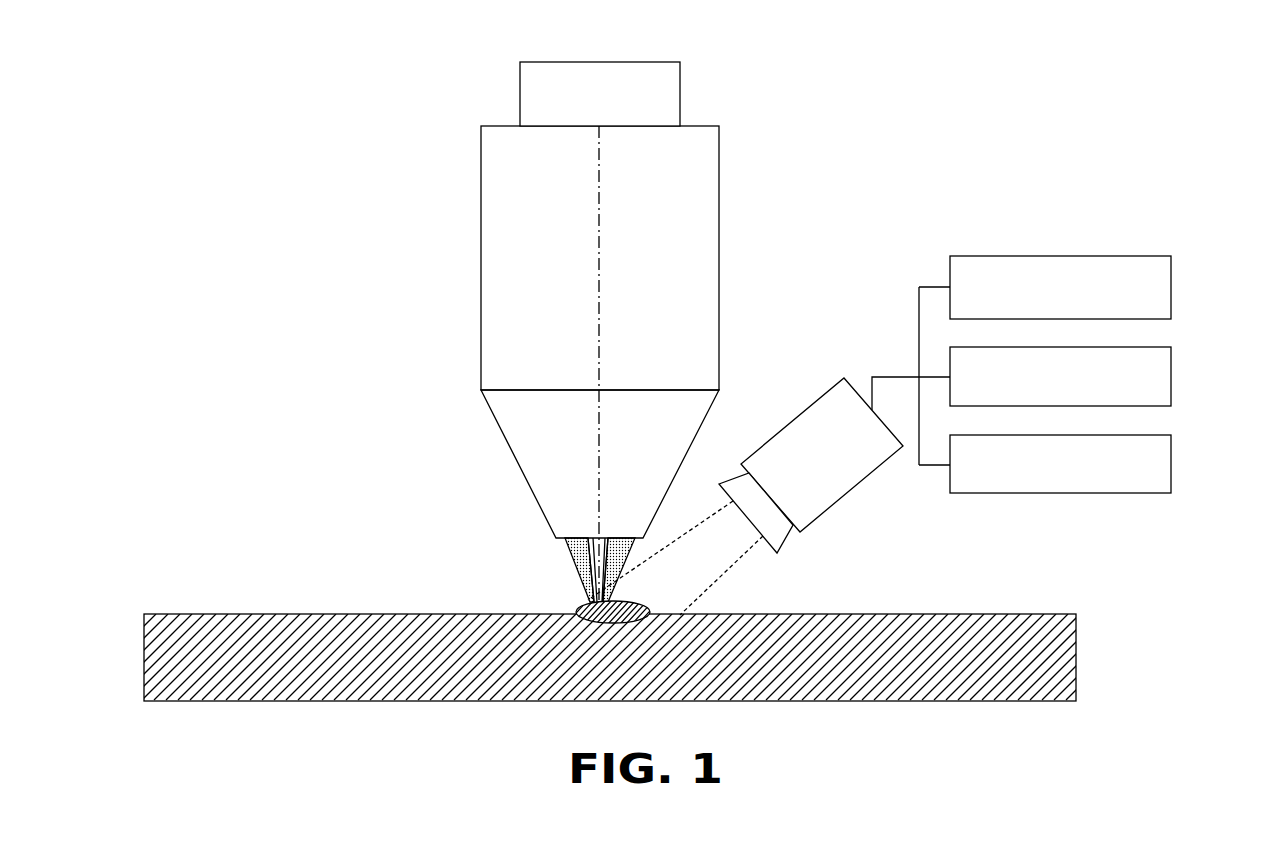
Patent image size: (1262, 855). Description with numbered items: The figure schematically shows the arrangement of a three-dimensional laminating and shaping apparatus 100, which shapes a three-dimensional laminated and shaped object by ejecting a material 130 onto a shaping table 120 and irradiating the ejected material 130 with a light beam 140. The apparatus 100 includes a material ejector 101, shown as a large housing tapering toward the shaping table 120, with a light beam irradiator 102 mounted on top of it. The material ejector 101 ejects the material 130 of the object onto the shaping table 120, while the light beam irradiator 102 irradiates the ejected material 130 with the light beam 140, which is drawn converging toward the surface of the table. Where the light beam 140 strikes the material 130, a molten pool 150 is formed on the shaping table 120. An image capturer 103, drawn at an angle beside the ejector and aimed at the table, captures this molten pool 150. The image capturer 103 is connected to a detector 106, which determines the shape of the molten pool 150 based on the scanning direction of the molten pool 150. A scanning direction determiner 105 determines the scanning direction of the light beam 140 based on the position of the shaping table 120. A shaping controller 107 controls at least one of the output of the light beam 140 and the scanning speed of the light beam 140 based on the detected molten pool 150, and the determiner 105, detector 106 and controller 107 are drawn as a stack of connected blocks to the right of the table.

The three-dimensional laminating and shaping apparatus 100 is at (364, 147).
The material ejector 101 is at (481, 222).
The light beam irradiator 102 is at (680, 93).
The image capturer 103 is at (848, 495).
The scanning direction determiner 105 is at (1172, 283).
The detector 106 is at (1172, 372).
The shaping controller 107 is at (1172, 461).
The shaping table 120 is at (247, 614).
The material 130 is at (582, 580).
The light beam 140 is at (565, 546).
The molten pool 150 is at (583, 607).